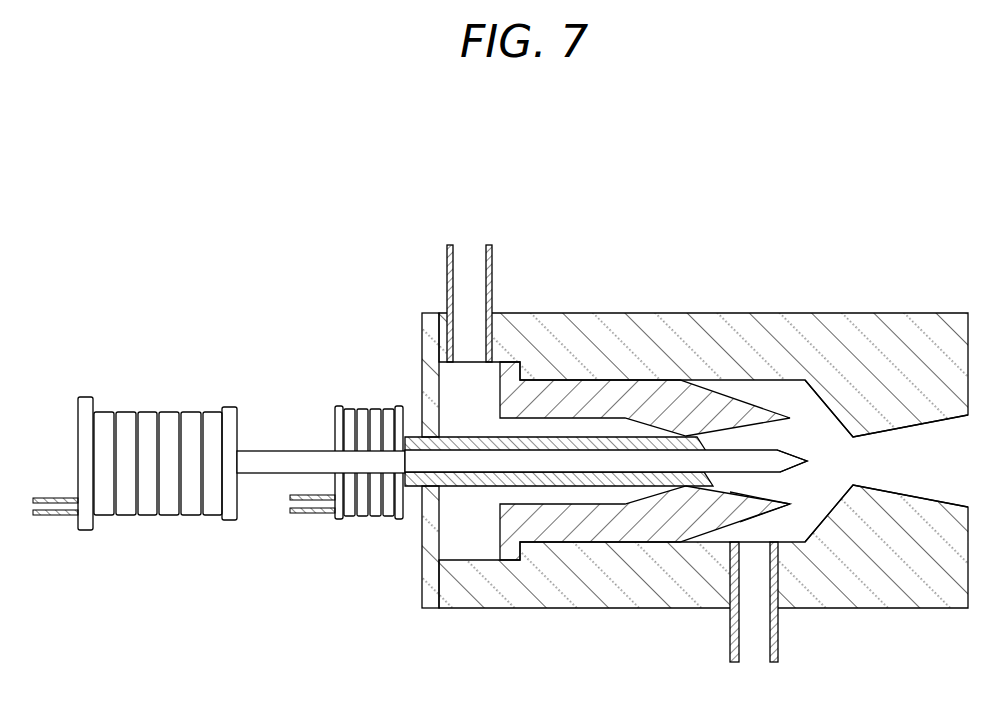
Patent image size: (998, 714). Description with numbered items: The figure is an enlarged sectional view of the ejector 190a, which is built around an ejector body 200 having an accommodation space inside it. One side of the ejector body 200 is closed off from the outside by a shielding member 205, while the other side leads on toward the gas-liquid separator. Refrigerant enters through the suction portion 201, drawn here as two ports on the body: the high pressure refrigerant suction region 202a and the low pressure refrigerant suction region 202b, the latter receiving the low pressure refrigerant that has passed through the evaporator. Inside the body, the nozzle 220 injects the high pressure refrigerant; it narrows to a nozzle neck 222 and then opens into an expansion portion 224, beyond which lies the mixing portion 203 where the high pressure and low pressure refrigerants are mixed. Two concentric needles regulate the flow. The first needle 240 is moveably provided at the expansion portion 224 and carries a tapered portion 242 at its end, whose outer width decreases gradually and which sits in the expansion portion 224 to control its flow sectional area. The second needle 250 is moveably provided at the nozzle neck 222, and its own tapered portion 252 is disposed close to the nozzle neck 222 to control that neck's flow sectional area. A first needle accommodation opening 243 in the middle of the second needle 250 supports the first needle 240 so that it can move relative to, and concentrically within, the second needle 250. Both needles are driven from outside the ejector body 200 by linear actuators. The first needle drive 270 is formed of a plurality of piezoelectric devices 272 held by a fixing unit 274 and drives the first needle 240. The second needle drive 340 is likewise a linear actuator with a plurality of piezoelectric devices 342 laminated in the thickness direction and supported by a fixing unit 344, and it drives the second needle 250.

The ejector 190a is at (266, 271).
The ejector body 200 is at (909, 303).
The suction portion 201 is at (863, 141).
The high pressure refrigerant suction region 202a is at (492, 280).
The low pressure refrigerant suction region 202b is at (777, 636).
The mixing portion 203 is at (813, 443).
The shielding member 205 is at (430, 567).
The nozzle 220 is at (637, 392).
The nozzle neck 222 is at (714, 498).
The expansion portion 224 is at (790, 505).
The first needle 240 is at (579, 470).
The tapered portion 242 is at (792, 452).
The first needle accommodation opening 243 is at (430, 487).
The second needle 250 is at (518, 488).
The tapered portion 252 is at (698, 440).
The first needle drive 270 is at (53, 333).
The piezoelectric devices 272 is at (145, 420).
The fixing unit 274 is at (87, 397).
The second needle drive 340 is at (308, 333).
The piezoelectric devices 342 is at (377, 415).
The fixing unit 344 is at (340, 407).